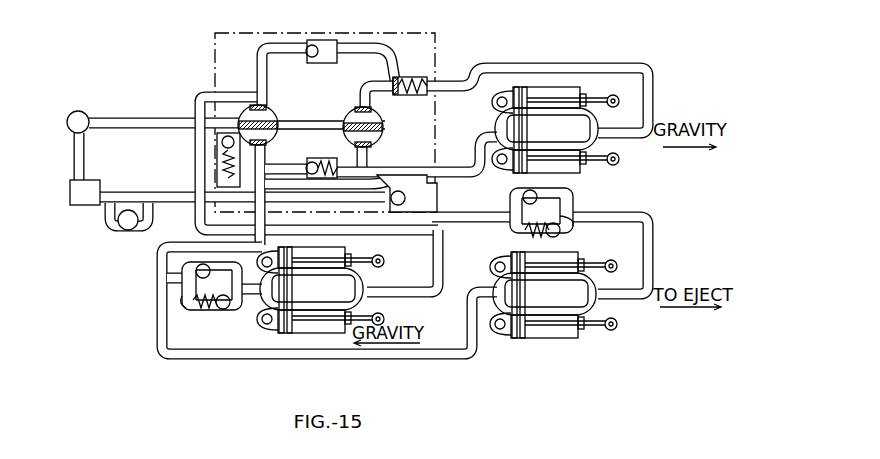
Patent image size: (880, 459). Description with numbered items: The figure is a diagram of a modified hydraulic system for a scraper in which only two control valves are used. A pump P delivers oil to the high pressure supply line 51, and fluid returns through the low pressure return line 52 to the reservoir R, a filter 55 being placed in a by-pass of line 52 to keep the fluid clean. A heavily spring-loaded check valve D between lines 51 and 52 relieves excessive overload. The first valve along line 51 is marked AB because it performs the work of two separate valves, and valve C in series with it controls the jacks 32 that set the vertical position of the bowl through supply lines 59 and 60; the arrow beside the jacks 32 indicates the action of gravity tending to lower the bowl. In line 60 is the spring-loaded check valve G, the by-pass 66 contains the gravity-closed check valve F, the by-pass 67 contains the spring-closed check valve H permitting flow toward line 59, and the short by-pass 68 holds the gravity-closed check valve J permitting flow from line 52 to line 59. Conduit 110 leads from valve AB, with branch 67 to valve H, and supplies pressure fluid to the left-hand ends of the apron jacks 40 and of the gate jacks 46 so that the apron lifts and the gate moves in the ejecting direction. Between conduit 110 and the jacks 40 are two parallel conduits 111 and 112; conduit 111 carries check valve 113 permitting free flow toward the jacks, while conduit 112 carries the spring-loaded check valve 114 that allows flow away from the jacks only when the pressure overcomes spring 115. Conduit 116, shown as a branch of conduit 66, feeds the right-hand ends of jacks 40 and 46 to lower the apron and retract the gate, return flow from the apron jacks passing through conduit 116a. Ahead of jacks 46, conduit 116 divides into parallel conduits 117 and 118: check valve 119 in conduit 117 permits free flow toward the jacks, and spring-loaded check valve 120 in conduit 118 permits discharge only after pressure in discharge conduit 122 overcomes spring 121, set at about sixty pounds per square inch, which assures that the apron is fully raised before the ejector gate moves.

The high pressure supply line 51 is at (117, 118).
The low pressure return line 52 is at (157, 190).
The filter 55 is at (120, 226).
The supply line 59 is at (472, 156).
The supply line 60 is at (580, 70).
The by-pass 66 is at (265, 72).
The by-pass 67 is at (278, 170).
The by-pass 68 is at (418, 180).
The jacks 32 is at (507, 99).
The jacks 40 is at (343, 268).
The jacks 46 is at (567, 334).
The conduit 110 is at (263, 158).
The conduit 111 is at (185, 272).
The conduit 112 is at (188, 304).
The check valve 113 is at (200, 265).
The spring-loaded check valve 114 is at (223, 310).
The spring 115 is at (200, 308).
The conduit 116 is at (204, 92).
The conduit 116a is at (441, 268).
The conduit 117 is at (510, 201).
The conduit 118 is at (508, 228).
The check valve 119 is at (522, 193).
The spring loaded check valve 120 is at (560, 238).
The spring 121 is at (570, 224).
The discharge conduit 122 is at (648, 258).
The pump P is at (78, 122).
The reservoir R is at (85, 192).
The check valve D is at (215, 167).
The control valve AB is at (275, 118).
The control valve C is at (377, 122).
The gravity closed check valve F is at (329, 45).
The spring loaded check valve G is at (418, 80).
The spring closed check valve H is at (322, 163).
The gravity closed check valve J is at (420, 203).